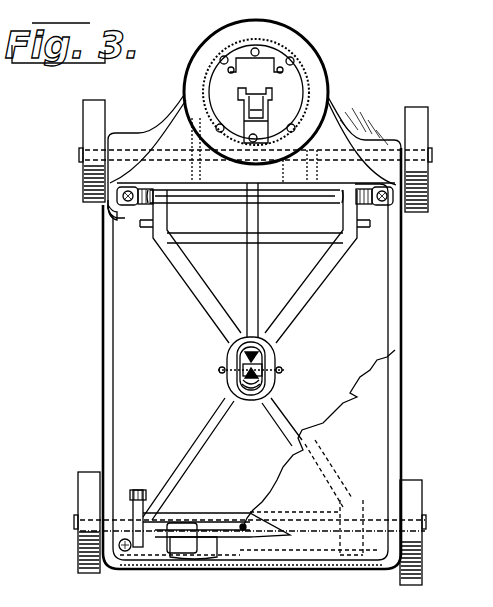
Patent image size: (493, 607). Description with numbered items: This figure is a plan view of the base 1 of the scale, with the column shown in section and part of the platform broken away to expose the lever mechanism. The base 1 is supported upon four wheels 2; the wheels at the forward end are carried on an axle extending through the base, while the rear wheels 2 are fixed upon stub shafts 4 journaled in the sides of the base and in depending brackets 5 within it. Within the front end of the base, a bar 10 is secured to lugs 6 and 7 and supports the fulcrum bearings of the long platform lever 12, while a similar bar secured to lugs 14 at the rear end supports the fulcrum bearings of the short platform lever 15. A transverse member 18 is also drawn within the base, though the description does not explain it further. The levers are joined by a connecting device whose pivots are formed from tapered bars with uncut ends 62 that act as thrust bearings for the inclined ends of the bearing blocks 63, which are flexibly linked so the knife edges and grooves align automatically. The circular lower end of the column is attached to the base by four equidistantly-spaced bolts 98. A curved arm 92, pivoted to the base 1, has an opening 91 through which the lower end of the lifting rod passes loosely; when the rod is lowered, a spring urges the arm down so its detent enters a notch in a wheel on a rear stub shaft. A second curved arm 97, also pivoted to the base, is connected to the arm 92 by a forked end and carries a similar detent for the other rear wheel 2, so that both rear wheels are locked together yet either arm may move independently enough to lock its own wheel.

The base 1 is at (106, 317).
The wheels 2 is at (85, 118).
The stub shafts 4 is at (127, 165).
The depending brackets 5 is at (177, 117).
The lug 6 is at (119, 566).
The lug 7 is at (198, 559).
The bar 10 is at (270, 552).
The long platform lever 12 is at (284, 412).
The lugs 14 is at (105, 211).
The short platform lever 15 is at (167, 250).
The axle tube 18 is at (218, 194).
The uncut ends 62 is at (222, 370).
The bearing block 63 is at (262, 370).
The opening 91 is at (240, 72).
The curved arm 92 is at (205, 70).
The second curved arm 97 is at (305, 78).
The bolts 98 is at (294, 57).